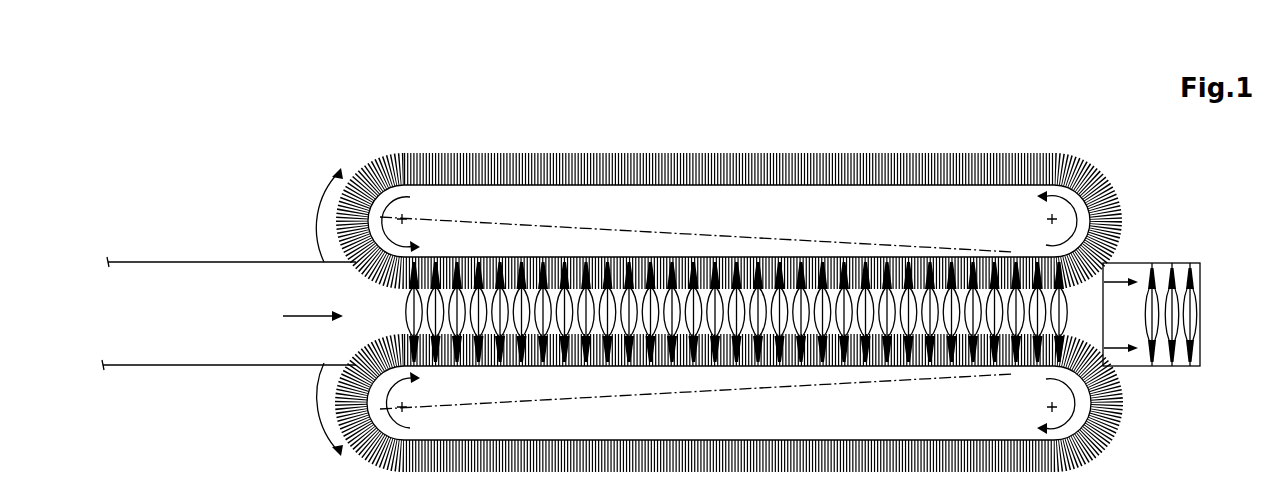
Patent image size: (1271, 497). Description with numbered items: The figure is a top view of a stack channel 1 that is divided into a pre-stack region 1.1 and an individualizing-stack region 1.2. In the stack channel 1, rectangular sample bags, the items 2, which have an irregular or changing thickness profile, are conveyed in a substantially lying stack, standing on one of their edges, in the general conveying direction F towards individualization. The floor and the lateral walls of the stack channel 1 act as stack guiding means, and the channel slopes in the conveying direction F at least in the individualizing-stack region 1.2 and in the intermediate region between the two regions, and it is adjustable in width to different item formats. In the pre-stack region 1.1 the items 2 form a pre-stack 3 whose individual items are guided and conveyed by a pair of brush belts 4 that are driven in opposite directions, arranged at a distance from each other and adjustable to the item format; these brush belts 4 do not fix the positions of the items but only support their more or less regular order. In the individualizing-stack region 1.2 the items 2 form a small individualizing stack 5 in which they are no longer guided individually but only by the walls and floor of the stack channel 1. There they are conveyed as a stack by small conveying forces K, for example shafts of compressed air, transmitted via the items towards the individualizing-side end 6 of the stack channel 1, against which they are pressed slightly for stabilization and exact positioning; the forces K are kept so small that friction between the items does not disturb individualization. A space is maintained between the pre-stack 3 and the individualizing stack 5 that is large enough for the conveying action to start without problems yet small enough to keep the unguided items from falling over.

The stack channel 1 is at (188, 262).
The pre-stack region 1.1 is at (622, 149).
The individualizing-stack region 1.2 is at (1181, 271).
The items 2 is at (407, 313).
The pre-stack 3 is at (727, 263).
The brush belts 4 is at (1086, 168).
The individualizing stack 5 is at (1190, 303).
The individualizing-side end of stack channel 6 is at (1201, 347).
The conveying direction F is at (300, 317).
The conveying forces K is at (1116, 282).